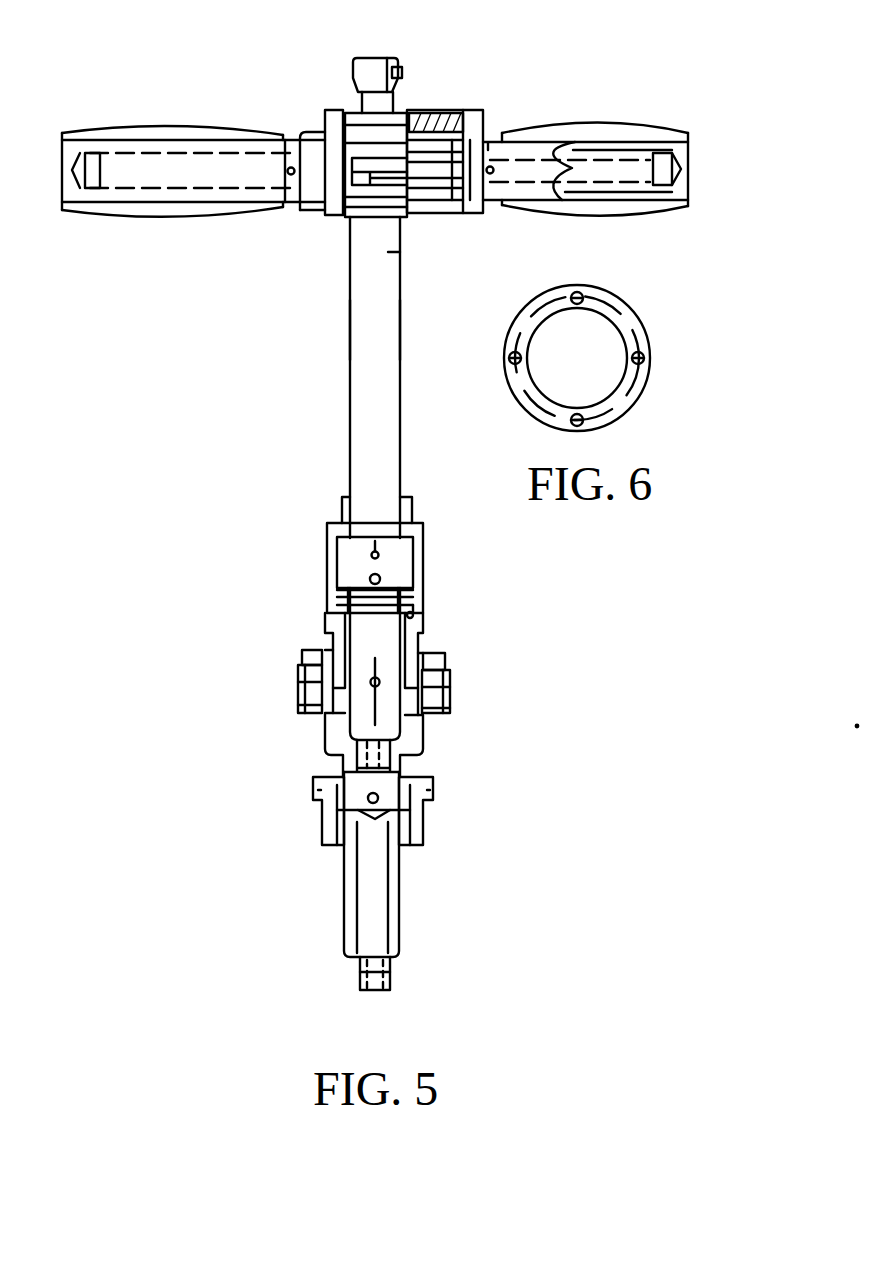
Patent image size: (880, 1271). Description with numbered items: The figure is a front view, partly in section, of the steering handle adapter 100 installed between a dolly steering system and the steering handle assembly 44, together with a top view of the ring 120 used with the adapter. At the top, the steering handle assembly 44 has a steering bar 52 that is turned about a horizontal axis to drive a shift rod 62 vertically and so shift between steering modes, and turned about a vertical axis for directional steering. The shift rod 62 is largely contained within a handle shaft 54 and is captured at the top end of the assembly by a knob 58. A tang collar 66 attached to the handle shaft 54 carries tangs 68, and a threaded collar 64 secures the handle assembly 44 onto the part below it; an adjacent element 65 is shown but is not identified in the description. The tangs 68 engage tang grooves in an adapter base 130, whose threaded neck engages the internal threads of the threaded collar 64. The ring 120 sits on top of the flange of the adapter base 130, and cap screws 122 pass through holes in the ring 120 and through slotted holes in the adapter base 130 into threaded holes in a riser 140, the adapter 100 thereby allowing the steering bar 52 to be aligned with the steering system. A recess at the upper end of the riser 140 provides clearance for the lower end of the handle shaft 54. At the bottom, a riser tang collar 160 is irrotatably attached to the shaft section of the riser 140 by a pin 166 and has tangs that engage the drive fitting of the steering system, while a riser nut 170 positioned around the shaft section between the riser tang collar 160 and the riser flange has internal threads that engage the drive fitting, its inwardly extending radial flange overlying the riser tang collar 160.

In FIG. 5, the steering handle assembly 44 is at (343, 323).
In FIG. 5, the steering bar 52 is at (660, 140).
In FIG. 5, the handle shaft 54 is at (385, 306).
In FIG. 5, the knob 58 is at (402, 65).
In FIG. 5, the shift rod 62 is at (380, 108).
In FIG. 5, the threaded collar 64 is at (422, 547).
In FIG. 5, the pin 65 is at (412, 613).
In FIG. 5, the tang collar 66 is at (355, 557).
In FIG. 5, the tangs 68 is at (372, 596).
In FIG. 5, the steering handle adapter 100 is at (296, 635).
In FIG. 5, the ring 120 is at (297, 667).
In FIG. 6, the ring 120 is at (643, 340).
In FIG. 5, the cap screws 122 is at (303, 656).
In FIG. 5, the adapter base 130 is at (420, 645).
In FIG. 5, the riser 140 is at (423, 738).
In FIG. 5, the riser tang collar 160 is at (368, 790).
In FIG. 5, the pin 166 is at (378, 792).
In FIG. 5, the riser nut 170 is at (425, 812).